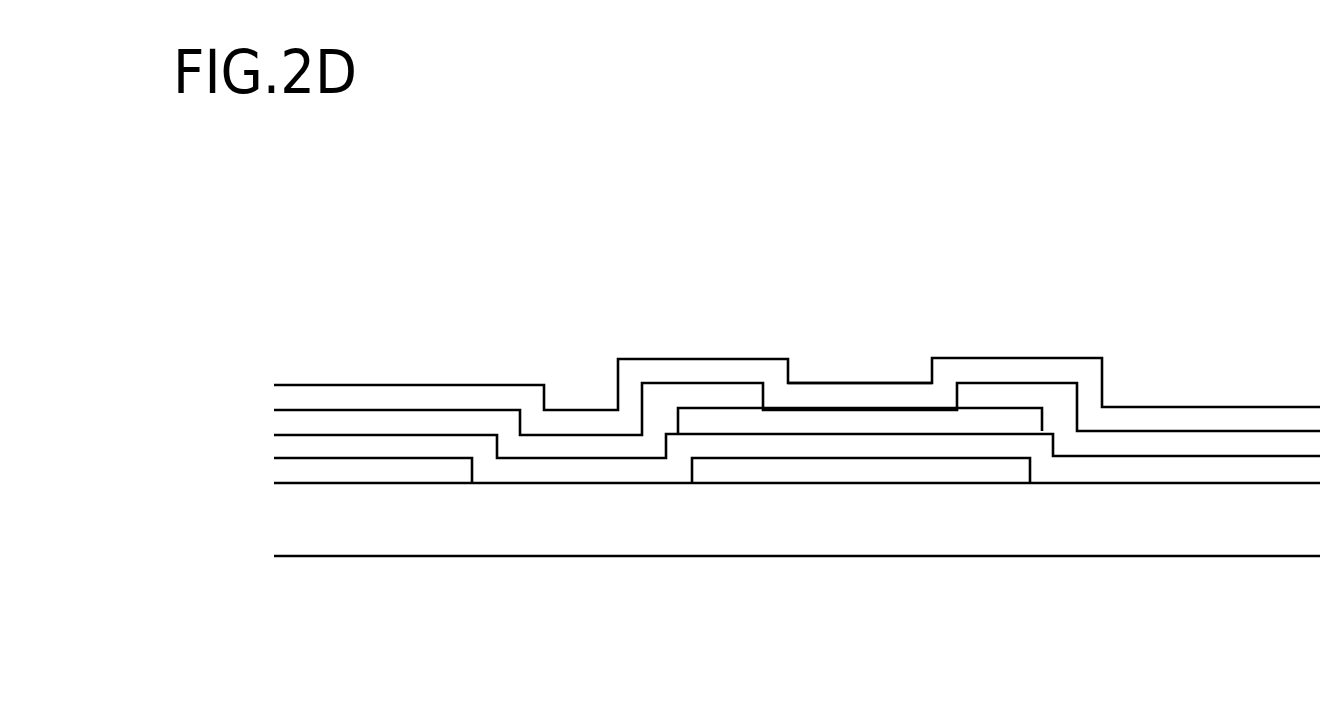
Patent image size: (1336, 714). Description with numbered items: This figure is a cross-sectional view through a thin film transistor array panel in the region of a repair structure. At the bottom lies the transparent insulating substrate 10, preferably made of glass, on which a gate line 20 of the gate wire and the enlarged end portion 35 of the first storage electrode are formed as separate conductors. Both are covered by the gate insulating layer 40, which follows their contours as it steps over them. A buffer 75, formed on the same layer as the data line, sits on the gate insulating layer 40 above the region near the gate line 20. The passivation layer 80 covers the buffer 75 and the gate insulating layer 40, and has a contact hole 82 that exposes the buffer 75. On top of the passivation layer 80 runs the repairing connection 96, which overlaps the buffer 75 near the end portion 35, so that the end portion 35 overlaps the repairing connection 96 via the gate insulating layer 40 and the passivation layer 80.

The transparent insulating substrate 10 is at (957, 542).
The gate line 20 is at (812, 470).
The end portion of the first storage electrode 35 is at (400, 470).
The gate insulating layer 40 is at (582, 470).
The buffer 75 is at (944, 420).
The passivation layer 80 is at (412, 422).
The contact hole 82 is at (860, 347).
The repairing connection 96 is at (1030, 372).